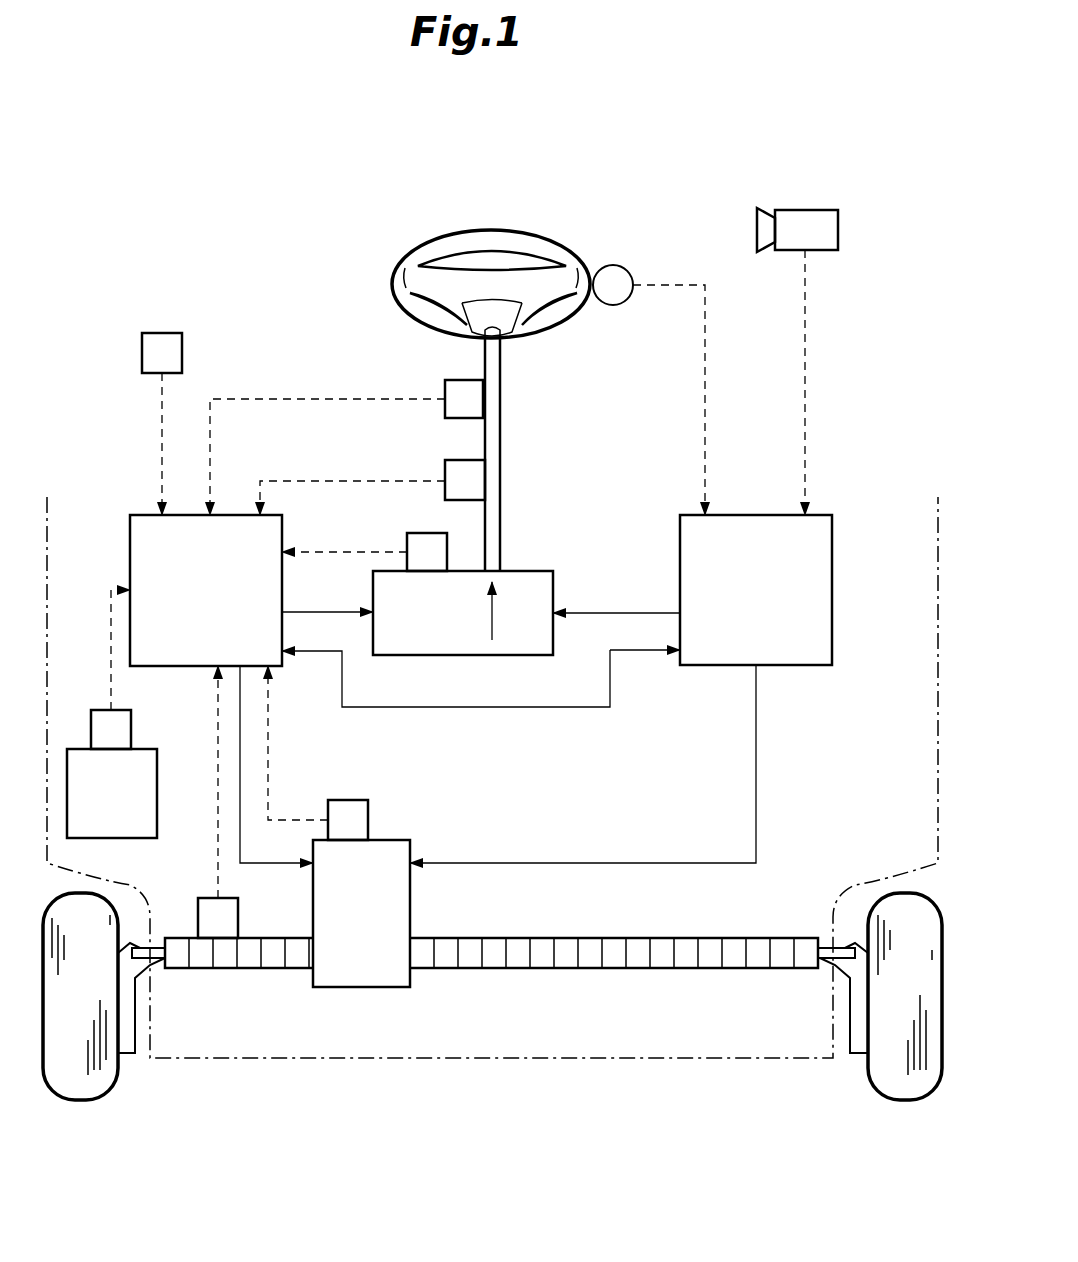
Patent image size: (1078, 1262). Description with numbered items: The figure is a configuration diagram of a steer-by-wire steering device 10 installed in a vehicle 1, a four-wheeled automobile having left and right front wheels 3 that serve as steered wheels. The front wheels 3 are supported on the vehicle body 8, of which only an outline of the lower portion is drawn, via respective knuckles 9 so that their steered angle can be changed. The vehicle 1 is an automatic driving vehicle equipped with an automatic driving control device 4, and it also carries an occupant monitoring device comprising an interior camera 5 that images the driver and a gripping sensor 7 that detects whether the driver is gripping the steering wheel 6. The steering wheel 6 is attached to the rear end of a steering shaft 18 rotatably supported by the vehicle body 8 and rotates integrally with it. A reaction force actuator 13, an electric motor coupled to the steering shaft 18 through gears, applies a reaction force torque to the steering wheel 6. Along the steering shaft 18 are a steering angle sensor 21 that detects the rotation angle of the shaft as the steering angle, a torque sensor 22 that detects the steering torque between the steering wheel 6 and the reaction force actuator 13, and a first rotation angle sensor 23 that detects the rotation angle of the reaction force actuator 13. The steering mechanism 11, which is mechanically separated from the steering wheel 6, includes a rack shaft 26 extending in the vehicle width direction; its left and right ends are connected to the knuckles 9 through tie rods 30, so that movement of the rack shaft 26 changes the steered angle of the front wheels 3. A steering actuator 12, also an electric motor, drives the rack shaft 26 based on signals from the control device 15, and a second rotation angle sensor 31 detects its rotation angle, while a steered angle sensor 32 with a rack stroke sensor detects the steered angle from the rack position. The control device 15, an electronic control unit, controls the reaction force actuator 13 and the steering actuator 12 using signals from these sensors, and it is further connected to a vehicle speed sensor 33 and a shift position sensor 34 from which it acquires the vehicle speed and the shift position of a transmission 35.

The vehicle 1 is at (187, 158).
The front wheels 3 is at (75, 1100).
The automatic driving control device 4 is at (757, 513).
The interior camera 5 is at (805, 210).
The steering wheel 6 is at (567, 322).
The gripping sensor 7 is at (617, 266).
The vehicle body 8 is at (713, 1062).
The knuckles 9 is at (127, 1053).
The steering device 10 is at (563, 202).
The steering mechanism 11 is at (280, 983).
The steering actuator 12 is at (340, 987).
The reaction force actuator 13 is at (535, 571).
The control device 15 is at (145, 515).
The steering shaft 18 is at (492, 422).
The steering angle sensor 21 is at (458, 380).
The torque sensor 22 is at (467, 460).
The first rotation angle sensor 23 is at (418, 533).
The rack shaft 26 is at (633, 968).
The tie rods 30 is at (158, 967).
The second rotation angle sensor 31 is at (368, 820).
The steered angle sensor 32 is at (198, 917).
The vehicle speed sensor 33 is at (170, 333).
The shift position sensor 34 is at (91, 733).
The transmission 35 is at (157, 817).